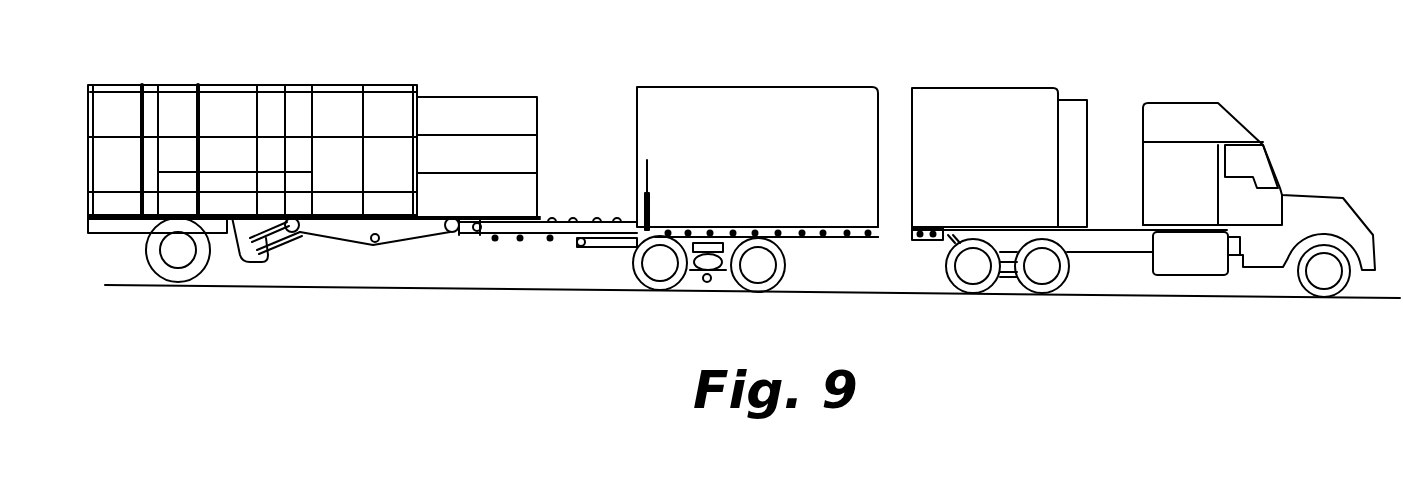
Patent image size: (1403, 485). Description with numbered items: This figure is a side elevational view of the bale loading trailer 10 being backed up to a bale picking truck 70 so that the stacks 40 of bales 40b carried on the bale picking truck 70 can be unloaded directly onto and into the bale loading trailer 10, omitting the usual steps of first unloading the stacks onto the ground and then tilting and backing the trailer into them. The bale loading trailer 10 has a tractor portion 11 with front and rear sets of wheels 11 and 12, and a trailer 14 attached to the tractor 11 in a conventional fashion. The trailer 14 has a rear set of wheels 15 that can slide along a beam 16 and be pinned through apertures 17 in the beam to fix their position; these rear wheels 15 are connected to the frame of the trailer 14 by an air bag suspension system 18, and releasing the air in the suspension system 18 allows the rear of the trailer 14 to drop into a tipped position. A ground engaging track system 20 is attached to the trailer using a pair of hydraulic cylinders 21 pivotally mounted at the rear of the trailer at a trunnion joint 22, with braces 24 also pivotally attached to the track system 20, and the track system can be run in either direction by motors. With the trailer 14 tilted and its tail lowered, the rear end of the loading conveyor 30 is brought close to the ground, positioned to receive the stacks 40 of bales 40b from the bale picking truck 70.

The bale loading trailer 10 is at (1143, 183).
The tractor portion 11 is at (1310, 283).
The rear set of wheels 12 is at (1007, 277).
The trailer 14 is at (962, 86).
The rear set of wheels 15 is at (773, 263).
The beam 16 is at (927, 230).
The apertures 17 is at (850, 237).
The air bag suspension system 18 is at (720, 278).
The ground engaging track system 20 is at (607, 247).
The hydraulic cylinders 21 is at (655, 217).
The trunnion joint 22 is at (662, 228).
The braces 24 is at (733, 227).
The loading conveyor 30 is at (533, 243).
The stacks of bales 40 is at (484, 129).
The bales 40b is at (458, 95).
The bale picking truck 70 is at (216, 86).